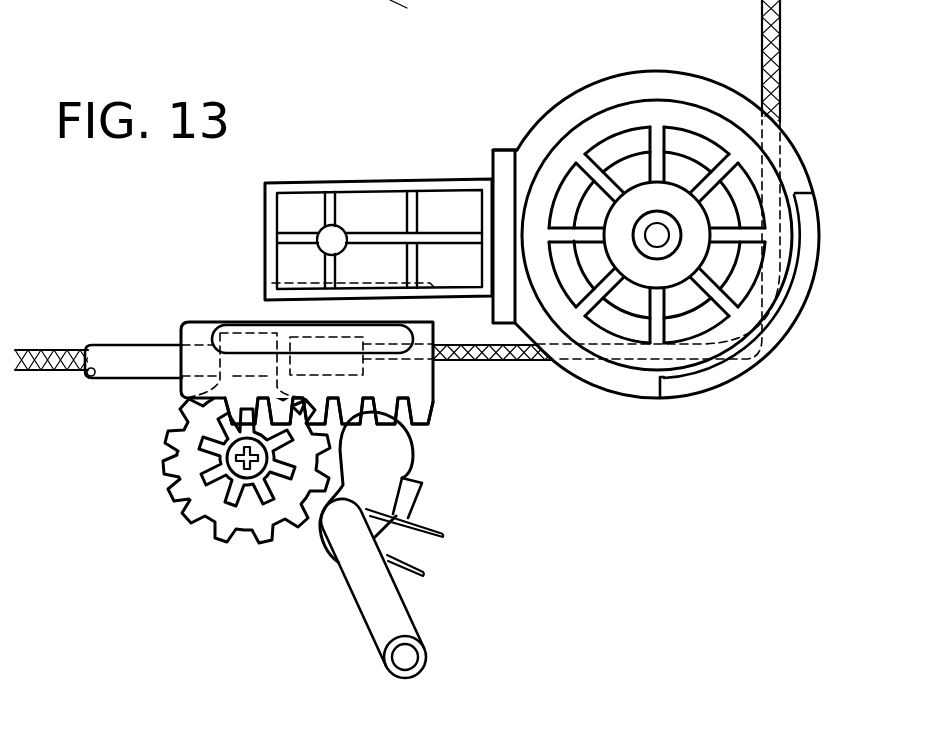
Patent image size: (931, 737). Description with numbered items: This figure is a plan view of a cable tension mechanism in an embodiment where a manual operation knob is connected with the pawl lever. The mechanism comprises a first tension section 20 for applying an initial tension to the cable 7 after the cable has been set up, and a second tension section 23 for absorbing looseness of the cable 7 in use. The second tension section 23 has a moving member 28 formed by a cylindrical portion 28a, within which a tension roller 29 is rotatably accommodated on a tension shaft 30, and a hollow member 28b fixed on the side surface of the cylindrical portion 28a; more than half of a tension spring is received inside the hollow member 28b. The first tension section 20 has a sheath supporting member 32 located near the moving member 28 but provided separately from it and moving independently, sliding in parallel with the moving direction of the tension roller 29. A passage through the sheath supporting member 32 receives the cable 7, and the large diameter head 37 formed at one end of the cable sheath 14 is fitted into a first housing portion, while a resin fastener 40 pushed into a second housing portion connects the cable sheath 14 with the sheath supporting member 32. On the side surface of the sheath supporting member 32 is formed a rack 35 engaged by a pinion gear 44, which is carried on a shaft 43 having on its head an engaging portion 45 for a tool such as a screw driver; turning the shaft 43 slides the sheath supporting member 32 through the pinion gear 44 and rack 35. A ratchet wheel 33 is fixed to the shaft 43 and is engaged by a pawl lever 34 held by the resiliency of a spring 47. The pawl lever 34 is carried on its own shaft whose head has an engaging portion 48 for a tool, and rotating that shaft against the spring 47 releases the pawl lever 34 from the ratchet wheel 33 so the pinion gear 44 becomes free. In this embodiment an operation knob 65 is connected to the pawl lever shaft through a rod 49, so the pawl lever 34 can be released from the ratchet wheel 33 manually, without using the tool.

The cable 7 is at (46, 350).
The cable sheath 14 is at (131, 340).
The first tension section 20 is at (196, 483).
The second tension section 23 is at (558, 98).
The moving member 28 is at (497, 148).
The cylindrical portion 28a is at (657, 83).
The hollow member 28b is at (365, 185).
The tension roller 29 is at (742, 190).
The tension shaft 30 is at (657, 235).
The sheath supporting member 32 is at (194, 323).
The ratchet wheel 33 is at (175, 480).
The pawl lever 34 is at (383, 455).
The rack 35 is at (427, 405).
The large diameter head 37 is at (307, 335).
The resin fastener 40 is at (240, 330).
The shaft 43 is at (243, 462).
The pinion gear 44 is at (256, 498).
The engaging portion 45 is at (243, 448).
The spring 47 is at (418, 575).
The engaging portion 48 is at (360, 13).
The rod 49 is at (347, 580).
The operation knob 65 is at (420, 655).